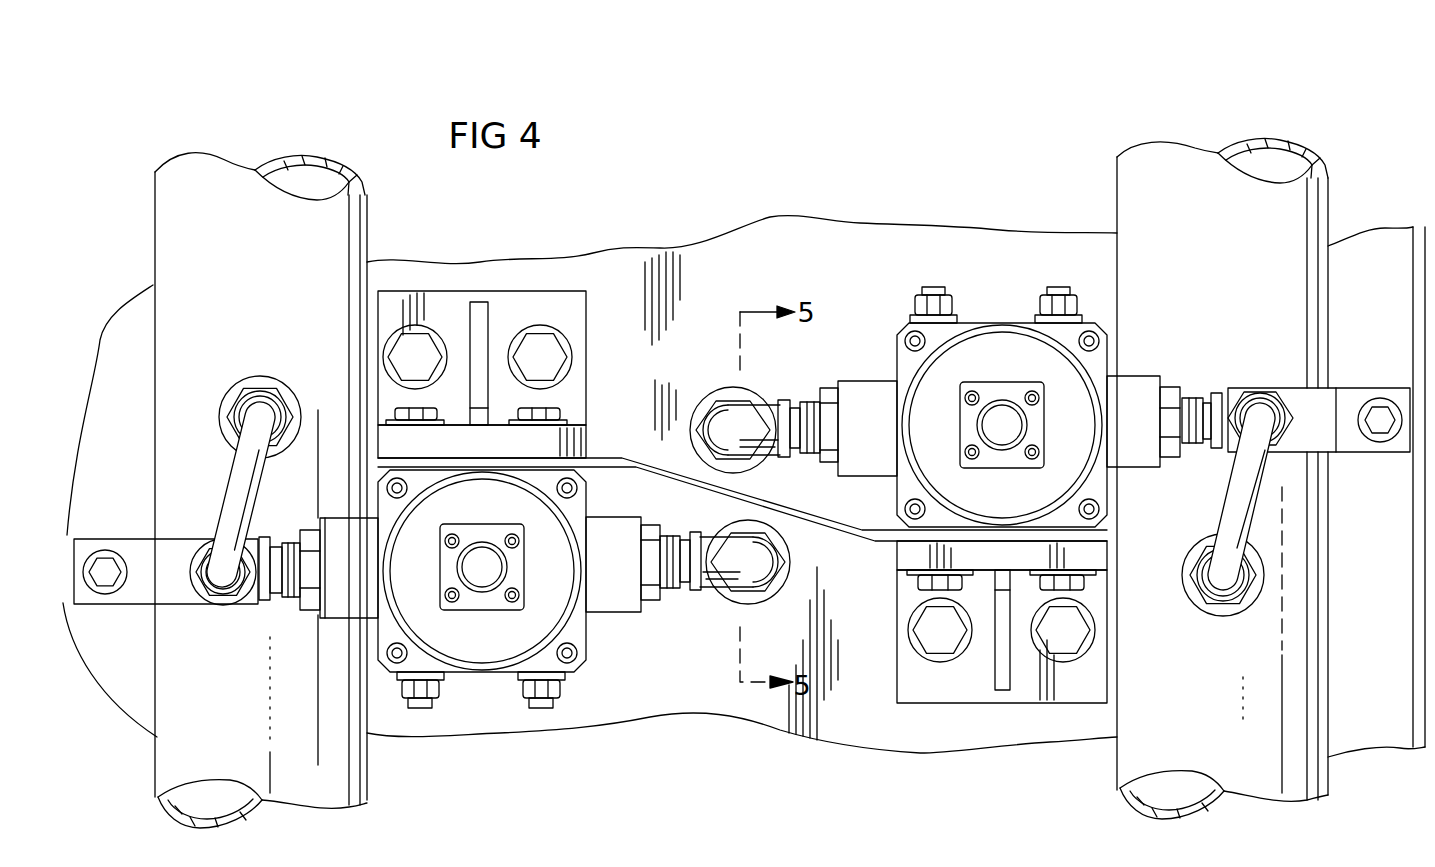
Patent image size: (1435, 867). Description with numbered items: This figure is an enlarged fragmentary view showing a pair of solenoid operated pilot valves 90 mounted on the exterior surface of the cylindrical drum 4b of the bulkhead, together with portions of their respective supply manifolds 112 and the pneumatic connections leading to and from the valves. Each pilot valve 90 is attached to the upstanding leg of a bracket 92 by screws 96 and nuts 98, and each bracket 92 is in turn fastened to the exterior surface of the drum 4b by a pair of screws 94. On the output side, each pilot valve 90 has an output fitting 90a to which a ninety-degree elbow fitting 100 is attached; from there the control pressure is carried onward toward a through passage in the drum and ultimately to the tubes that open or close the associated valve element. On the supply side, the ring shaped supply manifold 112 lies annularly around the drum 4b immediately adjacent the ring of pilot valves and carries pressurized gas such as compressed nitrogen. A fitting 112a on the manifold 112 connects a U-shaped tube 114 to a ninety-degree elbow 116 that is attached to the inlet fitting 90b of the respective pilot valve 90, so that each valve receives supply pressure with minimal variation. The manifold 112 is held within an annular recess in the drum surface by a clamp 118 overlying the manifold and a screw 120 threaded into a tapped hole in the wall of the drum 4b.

The cylindrical drum 4b is at (775, 237).
The pilot valve 90 is at (478, 645).
The output fitting 90a is at (860, 392).
The inlet fitting 90b is at (1140, 385).
The bracket 92 is at (455, 310).
The screw 94 is at (415, 352).
The screw 96 is at (400, 412).
The nut 98 is at (915, 305).
The 90° elbow fitting 100 is at (733, 420).
The supply manifold 112 is at (178, 142).
The fitting 112a is at (268, 392).
The U-shaped tube 114 is at (1238, 492).
The 90° elbow 116 is at (1235, 395).
The clamp 118 is at (1322, 440).
The screw 120 is at (1380, 415).